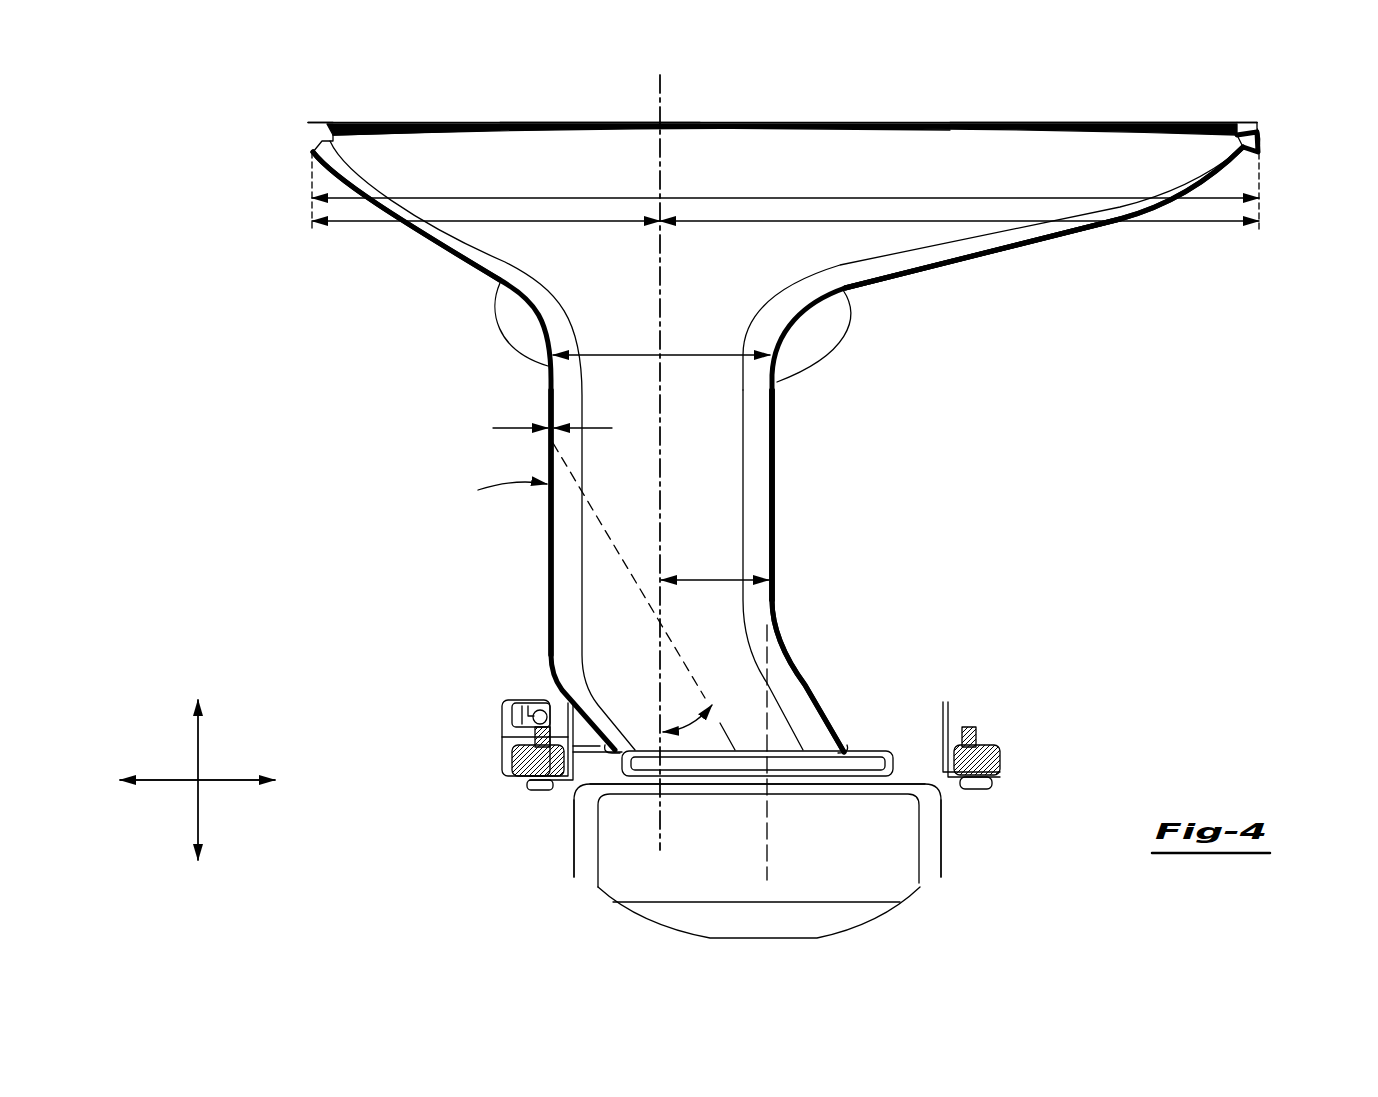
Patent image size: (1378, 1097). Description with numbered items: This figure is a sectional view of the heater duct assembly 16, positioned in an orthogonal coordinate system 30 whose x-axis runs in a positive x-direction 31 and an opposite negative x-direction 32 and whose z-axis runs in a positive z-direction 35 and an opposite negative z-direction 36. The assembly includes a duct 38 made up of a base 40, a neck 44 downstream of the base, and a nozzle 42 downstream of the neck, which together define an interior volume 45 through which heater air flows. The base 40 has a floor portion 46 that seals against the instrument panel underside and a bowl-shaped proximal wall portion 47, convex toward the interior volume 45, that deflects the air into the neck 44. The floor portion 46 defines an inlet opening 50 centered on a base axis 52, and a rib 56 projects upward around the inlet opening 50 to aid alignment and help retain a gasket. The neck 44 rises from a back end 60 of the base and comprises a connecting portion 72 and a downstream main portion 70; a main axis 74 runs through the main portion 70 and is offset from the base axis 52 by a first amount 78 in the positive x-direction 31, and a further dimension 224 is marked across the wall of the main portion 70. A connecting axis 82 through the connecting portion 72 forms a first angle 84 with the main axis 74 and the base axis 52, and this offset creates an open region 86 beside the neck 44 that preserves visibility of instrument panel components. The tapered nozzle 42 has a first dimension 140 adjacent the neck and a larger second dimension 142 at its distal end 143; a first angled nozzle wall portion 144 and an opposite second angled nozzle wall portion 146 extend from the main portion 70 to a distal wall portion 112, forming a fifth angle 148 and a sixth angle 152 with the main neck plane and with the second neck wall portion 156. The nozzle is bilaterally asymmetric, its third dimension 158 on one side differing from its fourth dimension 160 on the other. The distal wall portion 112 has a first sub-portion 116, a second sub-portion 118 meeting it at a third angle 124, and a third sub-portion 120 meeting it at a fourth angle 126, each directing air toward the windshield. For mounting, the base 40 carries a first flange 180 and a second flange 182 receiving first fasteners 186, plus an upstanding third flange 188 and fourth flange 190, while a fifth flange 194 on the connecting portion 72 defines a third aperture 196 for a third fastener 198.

The heater duct assembly 16 is at (1245, 76).
The orthogonal coordinate system 30 is at (165, 675).
The positive x-direction 31 is at (172, 779).
The negative x-direction 32 is at (222, 782).
The positive z-direction 35 is at (200, 757).
The negative z-direction 36 is at (195, 805).
The duct 38 is at (773, 590).
The base 40 is at (648, 878).
The nozzle 42 is at (1079, 232).
The neck 44 is at (774, 497).
The interior volume 45 is at (603, 558).
The floor portion 46 is at (915, 755).
The proximal wall portion 47 is at (580, 870).
The inlet opening 50 is at (876, 750).
The base axis 52 is at (770, 850).
The rib 56 is at (637, 750).
The back end 60 is at (872, 858).
The main portion 70 is at (781, 443).
The connecting portion 72 is at (817, 677).
The main axis 74 is at (662, 98).
The first amount 78 is at (712, 580).
The connecting axis 82 is at (607, 515).
The first angle 84 is at (693, 712).
The open region 86 is at (913, 472).
The distal wall portion 112 is at (840, 117).
The first sub-portion 116 is at (822, 130).
The second sub-portion 118 is at (405, 145).
The third sub-portion 120 is at (1075, 125).
The third angle 124 is at (310, 130).
The fourth angle 126 is at (1258, 128).
The first dimension 140 is at (705, 354).
The second dimension 142 is at (742, 197).
The distal end of the nozzle 143 is at (620, 124).
The first angled nozzle wall portion 144 is at (427, 243).
The second angled nozzle wall portion 146 is at (1025, 247).
The fifth angle 148 is at (505, 352).
The sixth angle 152 is at (822, 360).
The second neck wall portion 156 is at (771, 535).
The third dimension 158 is at (357, 223).
The fourth dimension 160 is at (1206, 223).
The first flange 180 is at (557, 790).
The second flange 182 is at (950, 788).
The first fasteners 186 is at (520, 765).
The third flange 188 is at (589, 662).
The fourth flange 190 is at (948, 705).
The fifth flange 194 is at (502, 707).
The third aperture 196 is at (518, 724).
The third fastener 198 is at (540, 710).
The wall thickness 224 is at (535, 429).